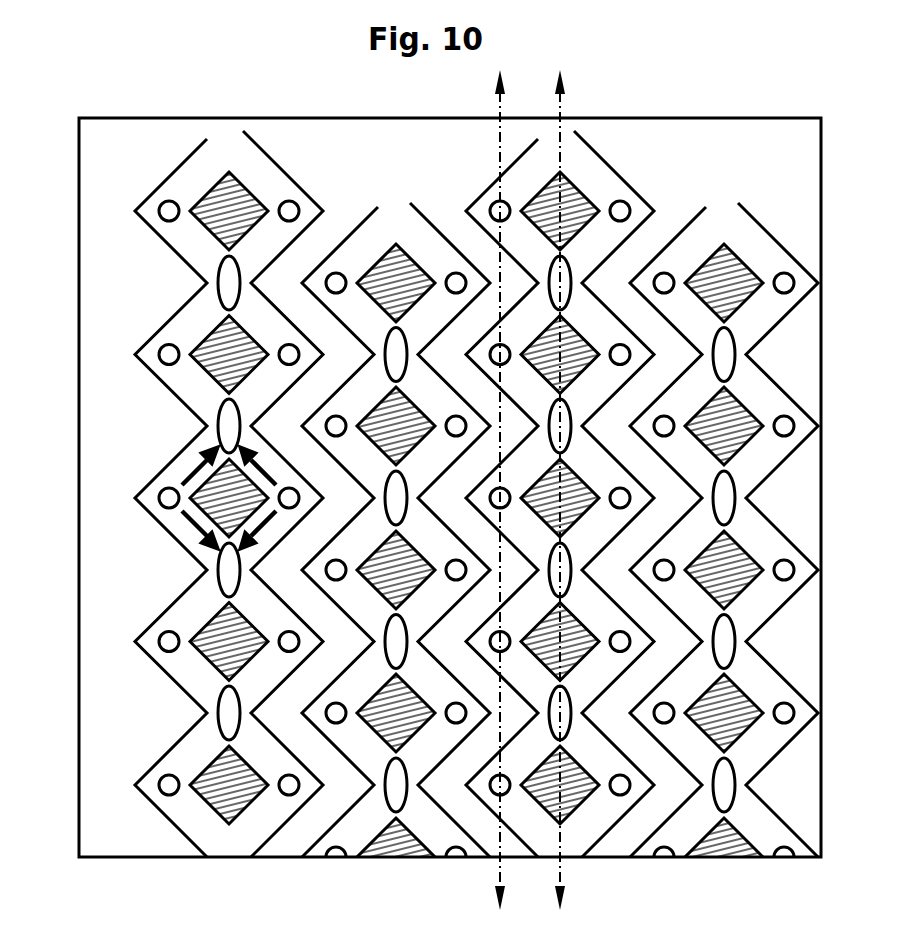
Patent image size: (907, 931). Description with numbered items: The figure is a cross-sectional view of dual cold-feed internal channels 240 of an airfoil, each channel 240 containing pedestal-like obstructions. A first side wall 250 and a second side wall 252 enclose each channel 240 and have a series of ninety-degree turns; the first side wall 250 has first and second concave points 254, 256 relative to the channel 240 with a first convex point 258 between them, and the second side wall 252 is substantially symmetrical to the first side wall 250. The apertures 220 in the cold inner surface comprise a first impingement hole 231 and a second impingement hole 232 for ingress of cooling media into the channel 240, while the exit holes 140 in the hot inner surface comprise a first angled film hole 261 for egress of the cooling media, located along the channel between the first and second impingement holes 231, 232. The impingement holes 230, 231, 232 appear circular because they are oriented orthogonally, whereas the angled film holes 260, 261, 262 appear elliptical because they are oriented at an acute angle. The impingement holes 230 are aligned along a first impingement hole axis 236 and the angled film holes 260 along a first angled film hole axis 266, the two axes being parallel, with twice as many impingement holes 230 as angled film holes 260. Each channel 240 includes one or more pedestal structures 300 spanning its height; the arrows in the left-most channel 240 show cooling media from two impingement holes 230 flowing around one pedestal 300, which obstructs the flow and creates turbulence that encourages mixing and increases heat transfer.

The exit holes 140 is at (217, 273).
The apertures 220 is at (163, 363).
The impingement holes 230 is at (160, 505).
The first impingement hole 231 is at (790, 423).
The second impingement hole 232 is at (785, 273).
The first impingement hole axis 236 is at (495, 870).
The internal channels 240 is at (353, 827).
The first side wall 250 is at (690, 217).
The second side wall 252 is at (752, 208).
The first concave point 254 is at (632, 283).
The second concave point 256 is at (632, 424).
The first convex point 258 is at (793, 332).
The angled film holes 260 is at (218, 568).
The first angled film hole 261 is at (732, 333).
The angled film hole 262 is at (733, 511).
The first angled film hole axis 266 is at (563, 870).
The pedestal structures 300 is at (208, 490).